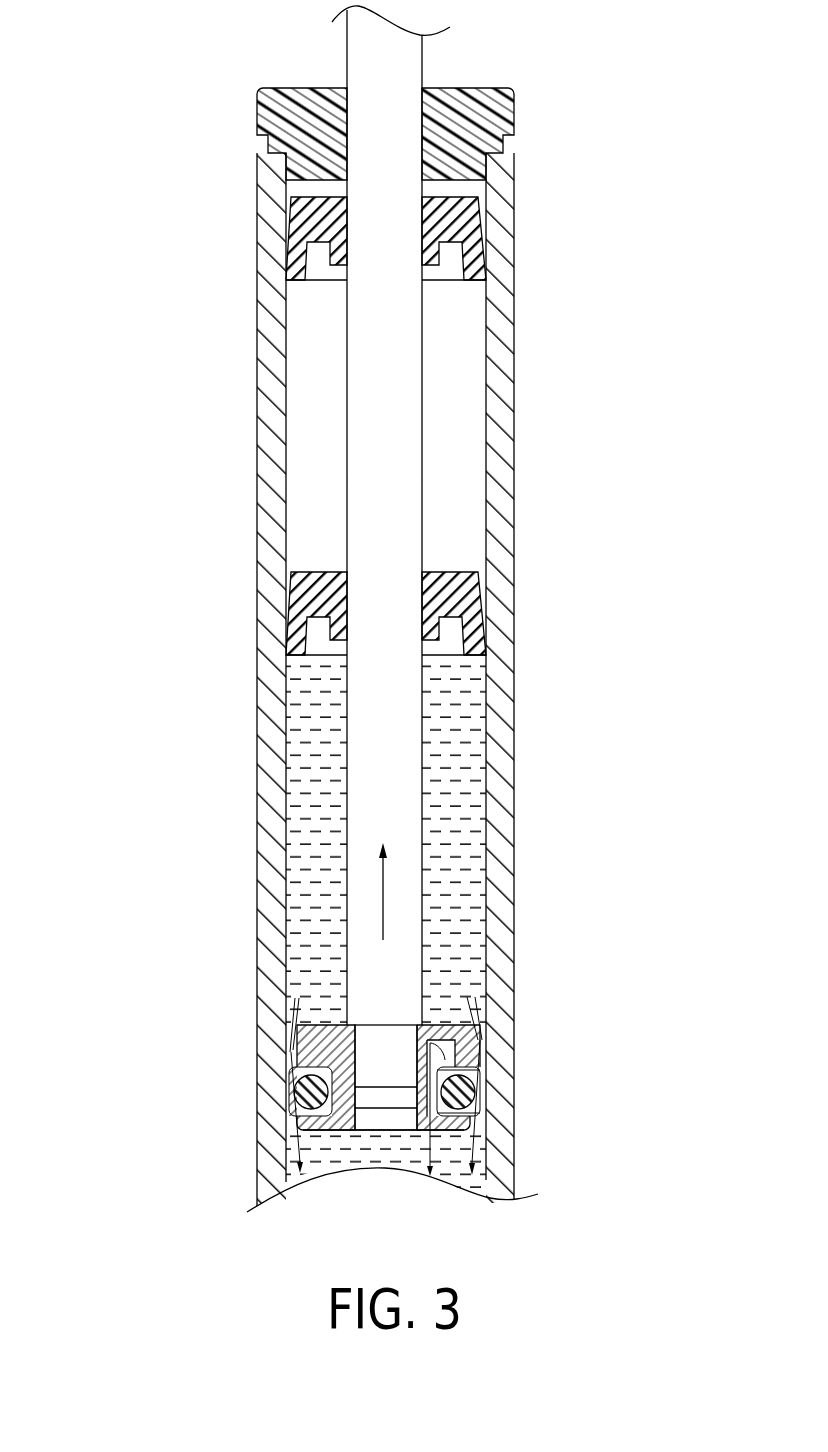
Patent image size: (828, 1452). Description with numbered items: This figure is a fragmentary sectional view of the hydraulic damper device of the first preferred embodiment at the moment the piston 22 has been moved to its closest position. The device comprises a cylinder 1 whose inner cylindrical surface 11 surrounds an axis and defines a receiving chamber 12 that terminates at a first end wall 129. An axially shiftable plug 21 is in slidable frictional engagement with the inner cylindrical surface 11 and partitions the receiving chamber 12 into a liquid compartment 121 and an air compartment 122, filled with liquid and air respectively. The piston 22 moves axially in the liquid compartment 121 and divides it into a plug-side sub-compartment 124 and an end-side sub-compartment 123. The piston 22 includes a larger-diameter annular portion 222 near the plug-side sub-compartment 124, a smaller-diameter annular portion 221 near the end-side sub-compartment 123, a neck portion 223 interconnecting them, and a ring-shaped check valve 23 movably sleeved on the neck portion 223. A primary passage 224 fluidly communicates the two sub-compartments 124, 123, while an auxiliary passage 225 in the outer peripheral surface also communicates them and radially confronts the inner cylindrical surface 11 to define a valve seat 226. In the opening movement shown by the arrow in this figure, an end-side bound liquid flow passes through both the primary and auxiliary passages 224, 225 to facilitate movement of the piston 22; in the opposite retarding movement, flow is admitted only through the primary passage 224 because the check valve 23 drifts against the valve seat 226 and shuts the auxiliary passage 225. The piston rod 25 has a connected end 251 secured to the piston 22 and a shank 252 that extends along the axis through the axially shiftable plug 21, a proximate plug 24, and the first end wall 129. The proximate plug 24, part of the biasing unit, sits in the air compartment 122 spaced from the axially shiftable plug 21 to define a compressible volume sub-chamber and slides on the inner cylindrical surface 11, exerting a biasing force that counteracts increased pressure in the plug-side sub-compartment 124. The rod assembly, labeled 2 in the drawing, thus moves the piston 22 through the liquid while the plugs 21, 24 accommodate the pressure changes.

The cylinder 1 is at (212, 763).
The piston rod assembly 2 is at (452, 770).
The inner cylindrical surface 11 is at (288, 805).
The receiving chamber 12 is at (283, 755).
The liquid compartment 121 is at (286, 837).
The air compartment 122 is at (286, 428).
The end-side sub-compartment 123 is at (360, 1157).
The plug-side sub-compartment 124 is at (310, 865).
The first end wall 129 is at (303, 183).
The axially shiftable plug 21 is at (478, 588).
The piston 22 is at (330, 1012).
The smaller-diameter annular portion 221 is at (485, 1063).
The larger-diameter annular portion 222 is at (322, 1047).
The neck portion 223 is at (347, 1133).
The primary passage 224 is at (437, 1040).
The auxiliary passage 225 is at (475, 1105).
The valve seat 226 is at (475, 1080).
The ring-shaped check valve 23 is at (295, 1089).
The proximate plug 24 is at (308, 218).
The piston rod 25 is at (388, 360).
The connected end 251 is at (388, 1015).
The shank 252 is at (413, 515).